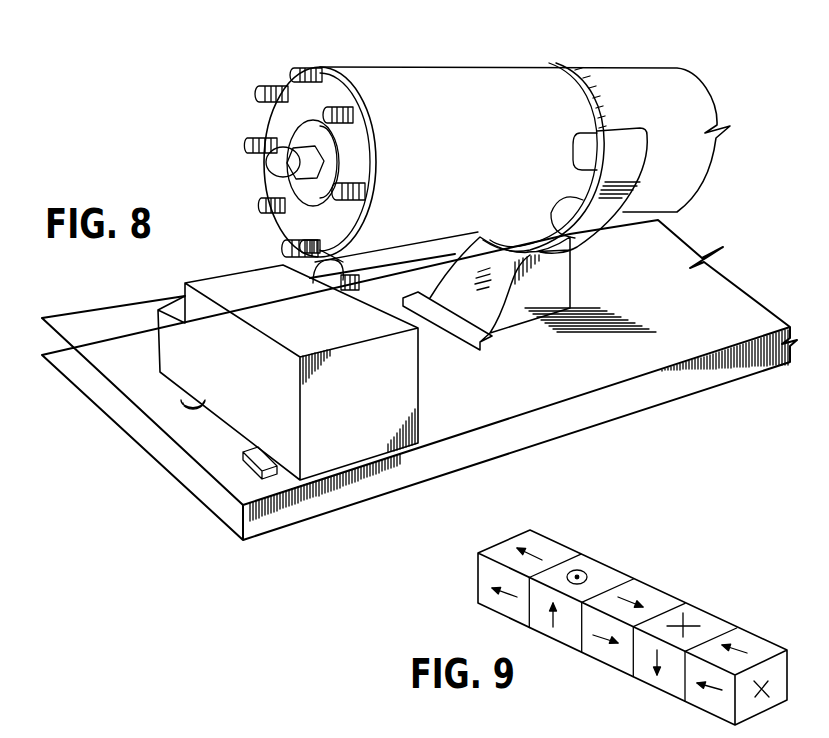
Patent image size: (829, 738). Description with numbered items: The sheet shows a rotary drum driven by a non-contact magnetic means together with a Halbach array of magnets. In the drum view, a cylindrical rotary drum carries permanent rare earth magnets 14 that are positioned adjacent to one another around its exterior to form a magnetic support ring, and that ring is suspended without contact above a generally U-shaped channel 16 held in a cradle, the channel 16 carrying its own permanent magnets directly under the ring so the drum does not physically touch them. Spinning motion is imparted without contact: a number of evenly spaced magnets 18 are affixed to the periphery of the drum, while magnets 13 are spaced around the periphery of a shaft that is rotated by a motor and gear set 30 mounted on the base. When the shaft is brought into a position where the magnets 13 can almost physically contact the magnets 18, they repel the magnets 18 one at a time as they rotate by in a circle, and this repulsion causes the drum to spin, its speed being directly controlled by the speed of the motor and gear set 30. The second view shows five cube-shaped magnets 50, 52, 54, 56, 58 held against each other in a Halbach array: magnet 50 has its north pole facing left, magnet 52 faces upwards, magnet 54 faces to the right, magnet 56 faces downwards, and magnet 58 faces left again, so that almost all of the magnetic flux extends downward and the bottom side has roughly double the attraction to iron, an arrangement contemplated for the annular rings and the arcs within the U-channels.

In FIG. 8, the magnets 13 is at (345, 243).
In FIG. 8, the permanent rare earth magnets 14 is at (583, 80).
In FIG. 8, the U-shaped channel 16 is at (637, 153).
In FIG. 8, the magnets 18 is at (257, 205).
In FIG. 8, the motor and gear set 30 is at (186, 505).
In FIG. 9, the magnet 50 is at (547, 545).
In FIG. 9, the magnet 52 is at (612, 575).
In FIG. 9, the magnet 54 is at (658, 600).
In FIG. 9, the magnet 56 is at (712, 627).
In FIG. 9, the magnet 58 is at (765, 653).